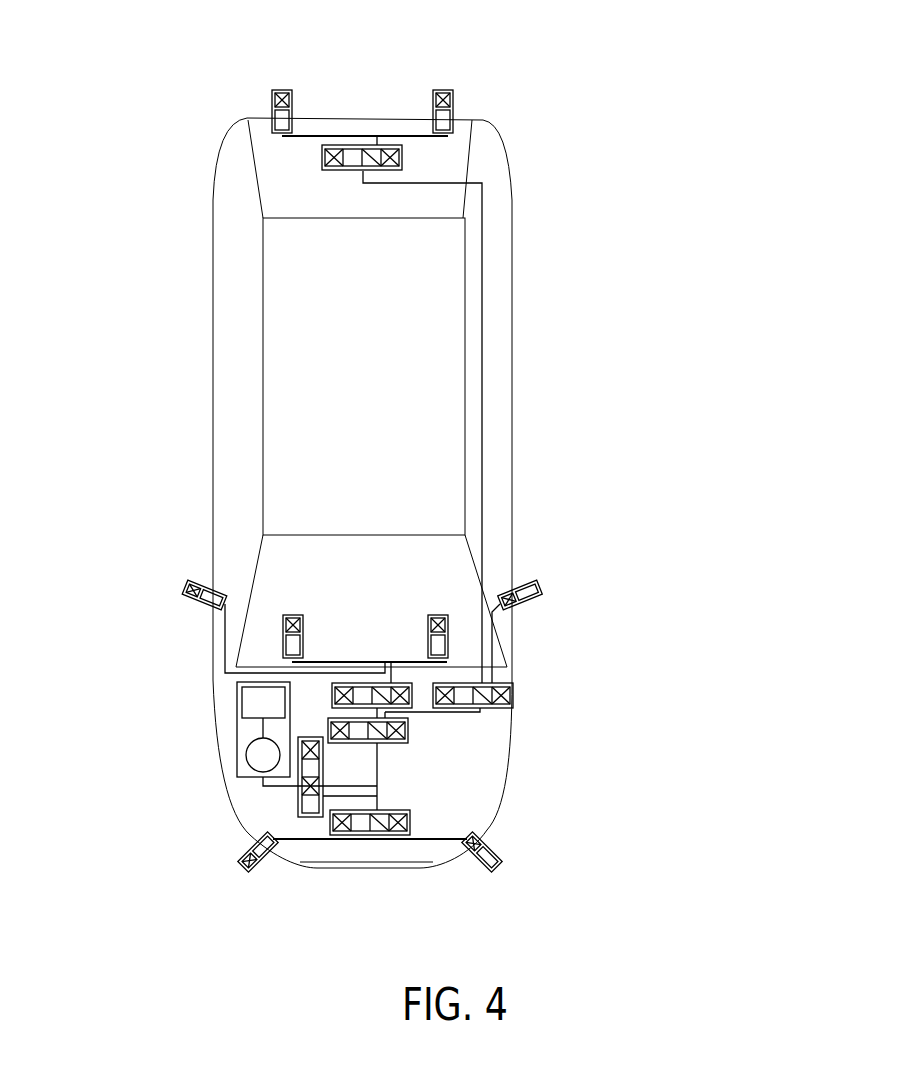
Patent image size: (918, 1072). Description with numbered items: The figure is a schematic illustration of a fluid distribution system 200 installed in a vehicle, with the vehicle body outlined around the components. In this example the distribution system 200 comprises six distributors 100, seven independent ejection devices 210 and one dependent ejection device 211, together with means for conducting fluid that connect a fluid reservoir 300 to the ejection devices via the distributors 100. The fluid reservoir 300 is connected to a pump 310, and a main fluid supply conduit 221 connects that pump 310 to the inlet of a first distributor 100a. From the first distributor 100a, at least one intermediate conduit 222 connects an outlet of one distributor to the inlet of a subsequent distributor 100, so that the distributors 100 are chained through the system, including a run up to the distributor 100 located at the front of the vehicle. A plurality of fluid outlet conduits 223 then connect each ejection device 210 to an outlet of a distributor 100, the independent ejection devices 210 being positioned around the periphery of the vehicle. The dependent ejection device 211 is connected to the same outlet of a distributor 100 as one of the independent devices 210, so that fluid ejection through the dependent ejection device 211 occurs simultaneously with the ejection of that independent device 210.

The fluid distributor 100 is at (403, 159).
The first distributor 100a is at (297, 802).
The fluid distribution system 200 is at (753, 572).
The independent ejection device 210 is at (435, 112).
The dependent ejection device 211 is at (297, 617).
The main fluid supply conduit 221 is at (297, 784).
The intermediate conduit 222 is at (482, 403).
The fluid outlet conduit 223 is at (313, 138).
The fluid reservoir 300 is at (258, 700).
The pump 310 is at (257, 752).